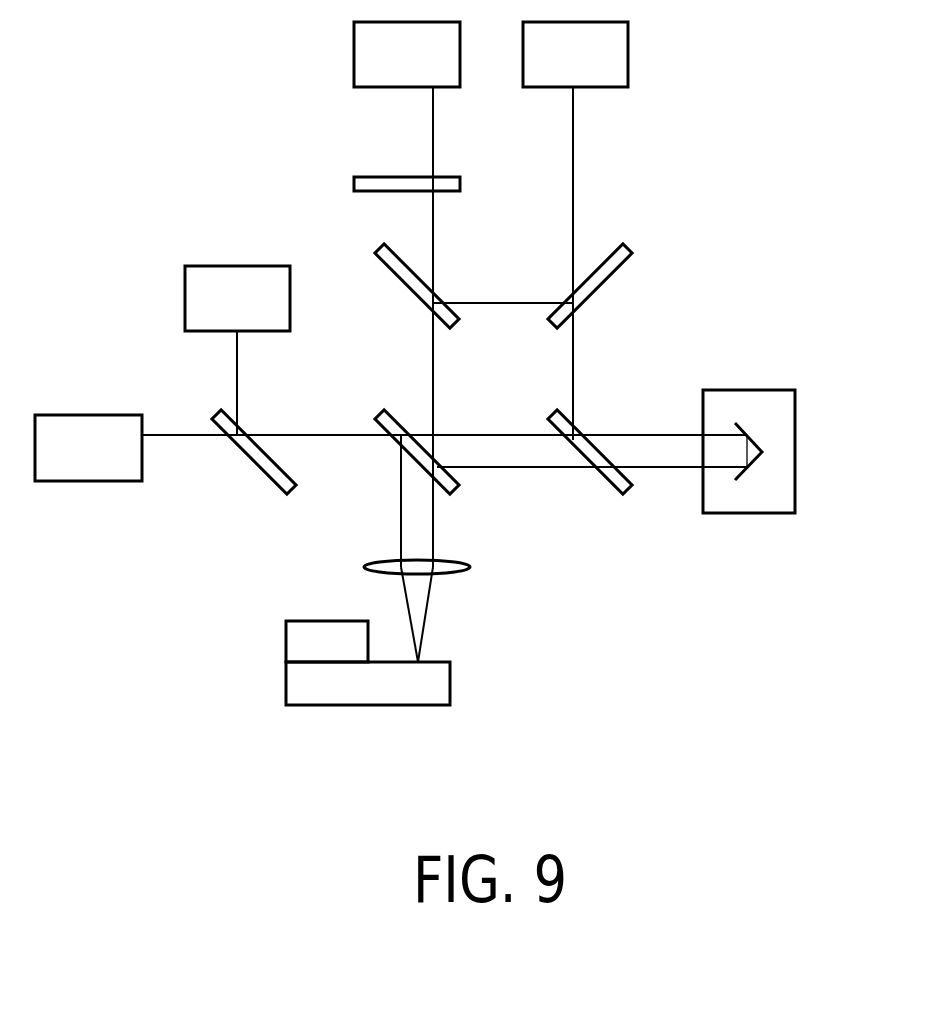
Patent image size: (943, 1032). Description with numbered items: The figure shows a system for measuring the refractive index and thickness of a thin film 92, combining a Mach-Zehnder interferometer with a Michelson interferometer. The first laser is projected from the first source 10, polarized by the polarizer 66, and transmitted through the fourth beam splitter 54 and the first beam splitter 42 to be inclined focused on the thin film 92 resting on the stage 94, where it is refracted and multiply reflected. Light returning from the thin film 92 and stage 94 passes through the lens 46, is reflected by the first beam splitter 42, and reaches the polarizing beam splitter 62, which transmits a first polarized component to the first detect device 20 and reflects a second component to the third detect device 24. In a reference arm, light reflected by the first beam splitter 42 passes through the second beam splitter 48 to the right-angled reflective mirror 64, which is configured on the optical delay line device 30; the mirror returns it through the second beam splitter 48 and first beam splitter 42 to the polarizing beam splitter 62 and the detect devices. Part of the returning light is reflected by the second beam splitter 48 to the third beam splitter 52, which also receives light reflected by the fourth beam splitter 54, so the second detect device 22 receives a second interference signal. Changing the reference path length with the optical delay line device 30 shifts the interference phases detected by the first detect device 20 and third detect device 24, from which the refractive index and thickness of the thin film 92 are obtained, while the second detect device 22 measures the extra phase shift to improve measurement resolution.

The first source 10 is at (393, 68).
The second detect device 22 is at (561, 68).
The third detect device 24 is at (223, 313).
The first detect device 20 is at (73, 460).
The optical delay line device 30 is at (751, 506).
The thin film 92 is at (313, 656).
The stage 94 is at (353, 698).
The polarizer 66 is at (377, 177).
The fourth beam splitter 54 is at (375, 253).
The third beam splitter 52 is at (632, 250).
The polarizing beam splitter 62 is at (222, 410).
The first beam splitter 42 is at (385, 412).
The second beam splitter 48 is at (557, 412).
The right-angled reflective mirror 64 is at (764, 445).
The lens 46 is at (387, 560).